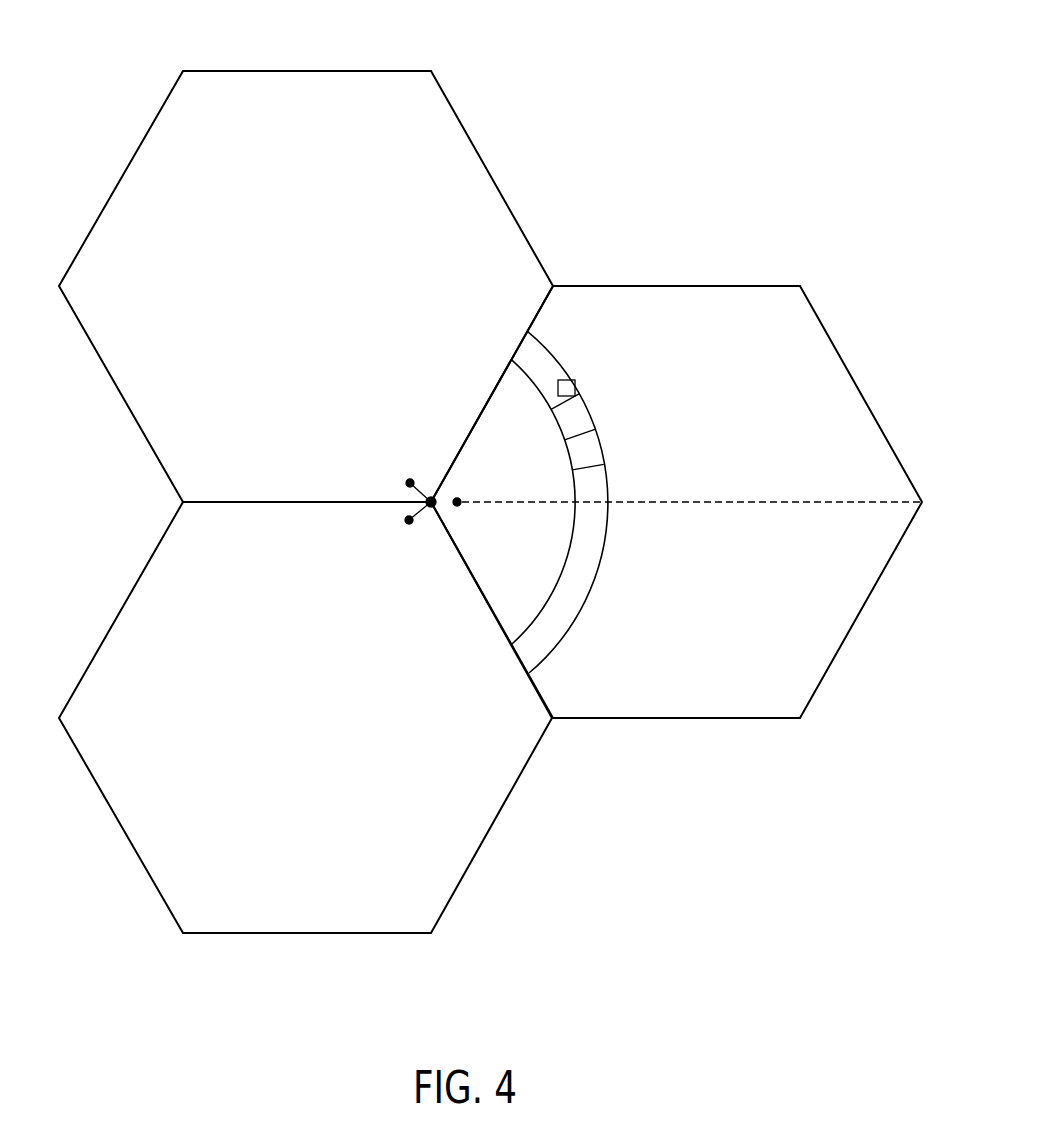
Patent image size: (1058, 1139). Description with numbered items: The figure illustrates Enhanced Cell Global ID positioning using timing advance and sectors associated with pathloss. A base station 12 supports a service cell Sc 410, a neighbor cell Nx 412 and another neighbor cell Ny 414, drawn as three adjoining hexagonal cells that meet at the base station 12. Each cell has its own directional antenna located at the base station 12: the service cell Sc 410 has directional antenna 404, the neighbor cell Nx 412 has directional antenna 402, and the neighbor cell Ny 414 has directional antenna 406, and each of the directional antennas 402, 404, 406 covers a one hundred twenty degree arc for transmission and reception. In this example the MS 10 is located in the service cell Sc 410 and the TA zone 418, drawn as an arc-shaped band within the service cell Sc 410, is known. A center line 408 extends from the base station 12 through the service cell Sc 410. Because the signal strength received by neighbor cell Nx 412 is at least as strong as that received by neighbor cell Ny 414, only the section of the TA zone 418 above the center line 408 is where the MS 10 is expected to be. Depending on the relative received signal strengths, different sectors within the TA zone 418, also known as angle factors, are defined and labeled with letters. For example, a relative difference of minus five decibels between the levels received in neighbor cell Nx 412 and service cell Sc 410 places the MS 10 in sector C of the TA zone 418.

The MS 10 is at (575, 388).
The base station 12 is at (430, 506).
The directional antenna 402 is at (410, 483).
The directional antenna 404 is at (458, 502).
The directional antenna 406 is at (409, 520).
The center line 408 is at (805, 506).
The service cell Sc 410 is at (748, 286).
The neighbor cell Nx 412 is at (343, 71).
The neighbor cell Ny 414 is at (487, 832).
The TA zone 418 is at (598, 578).